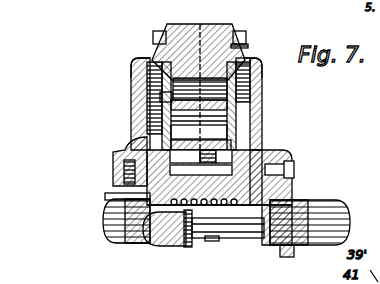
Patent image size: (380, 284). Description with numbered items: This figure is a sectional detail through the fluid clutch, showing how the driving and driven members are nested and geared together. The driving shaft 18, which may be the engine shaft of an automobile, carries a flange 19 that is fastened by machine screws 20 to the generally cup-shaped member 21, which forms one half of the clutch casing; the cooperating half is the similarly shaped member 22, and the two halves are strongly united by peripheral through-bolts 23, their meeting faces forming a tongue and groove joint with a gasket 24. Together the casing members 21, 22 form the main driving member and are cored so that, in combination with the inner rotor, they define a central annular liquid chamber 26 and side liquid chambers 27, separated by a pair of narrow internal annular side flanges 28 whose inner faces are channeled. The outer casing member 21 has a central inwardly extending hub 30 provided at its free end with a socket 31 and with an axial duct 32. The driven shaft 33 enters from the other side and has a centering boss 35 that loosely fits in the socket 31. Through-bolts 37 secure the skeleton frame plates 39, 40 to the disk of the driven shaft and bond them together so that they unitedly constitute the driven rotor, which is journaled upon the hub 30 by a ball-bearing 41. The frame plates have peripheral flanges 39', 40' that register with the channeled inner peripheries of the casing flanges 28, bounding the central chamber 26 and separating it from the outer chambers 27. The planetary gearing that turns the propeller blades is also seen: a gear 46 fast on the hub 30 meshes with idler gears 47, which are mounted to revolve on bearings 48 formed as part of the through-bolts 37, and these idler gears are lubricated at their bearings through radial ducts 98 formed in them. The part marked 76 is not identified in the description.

The driving shaft 18 is at (347, 213).
The flange 19 is at (294, 255).
The machine screws 20 is at (295, 168).
The cup-shaped member 21 is at (204, 40).
The casing member 22 is at (187, 30).
The peripheral through-bolts 23 is at (243, 45).
The gasket 24 is at (239, 30).
The central annular liquid chamber 26 is at (170, 80).
The side liquid chambers 27 is at (147, 82).
The internal annular side flanges 28 is at (131, 66).
The central inwardly extending hub 30 is at (266, 228).
The socket 31 is at (186, 230).
The axial duct 32 is at (226, 238).
The driven shaft 33 is at (106, 226).
The centering boss 35 is at (162, 240).
The through-bolts 37 is at (146, 138).
The skeleton frame plate 39 is at (168, 106).
The peripheral flange 39' is at (122, 93).
The skeleton frame plate 40 is at (233, 110).
The peripheral flange 40' is at (262, 56).
The ball-bearing 41 is at (198, 206).
The gear 46 is at (272, 198).
The idler gears 47 is at (258, 130).
The bearings 48 is at (262, 142).
The shaft end 76 is at (212, 260).
The radial ducts 98 is at (290, 182).